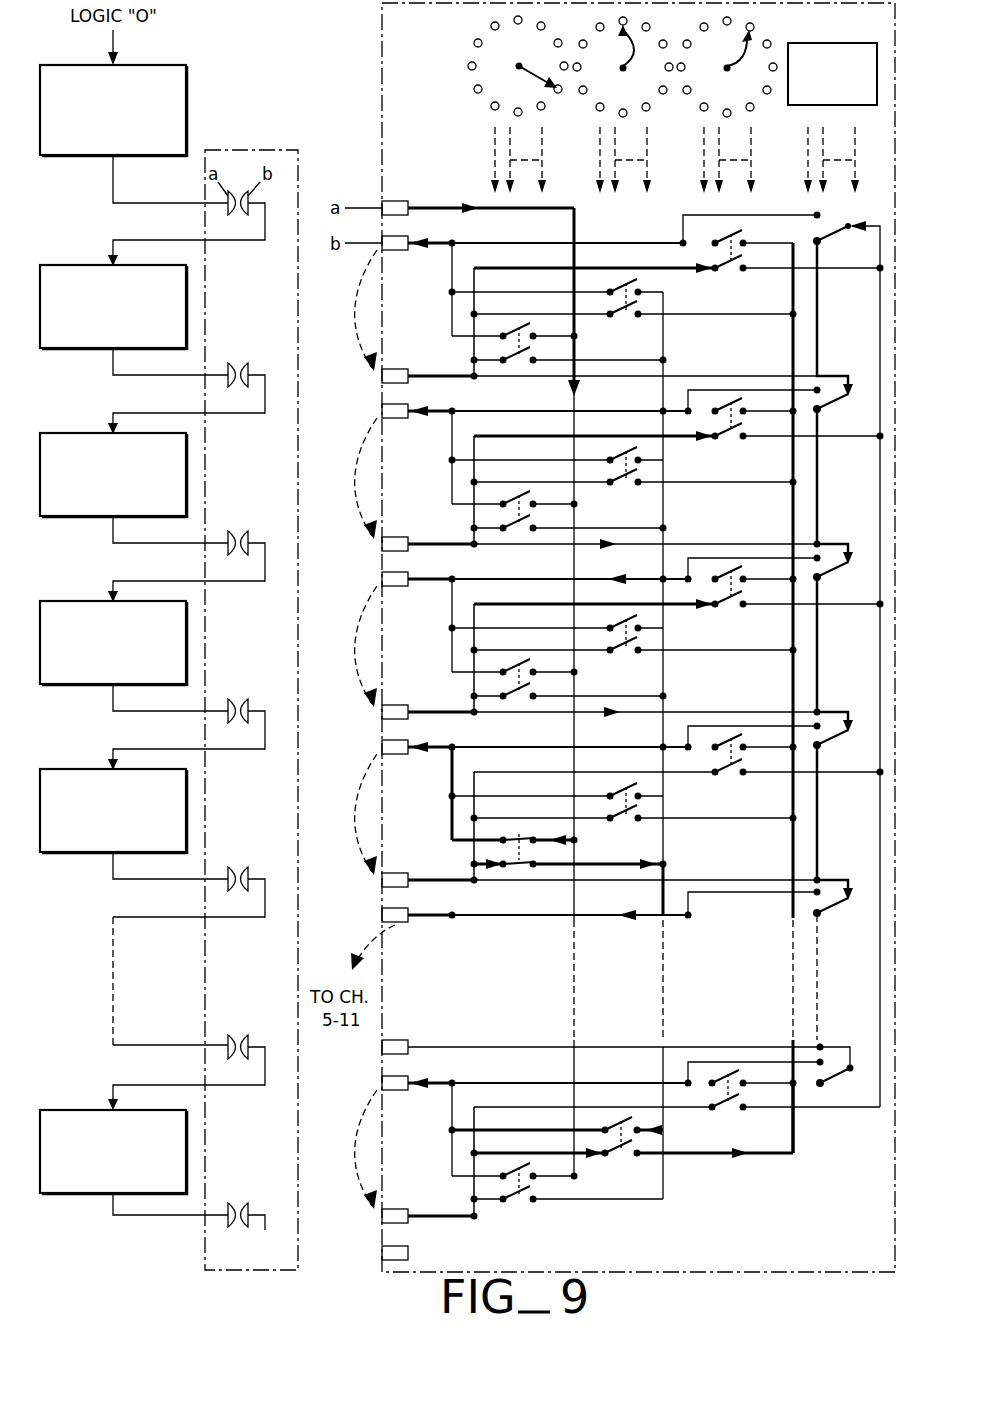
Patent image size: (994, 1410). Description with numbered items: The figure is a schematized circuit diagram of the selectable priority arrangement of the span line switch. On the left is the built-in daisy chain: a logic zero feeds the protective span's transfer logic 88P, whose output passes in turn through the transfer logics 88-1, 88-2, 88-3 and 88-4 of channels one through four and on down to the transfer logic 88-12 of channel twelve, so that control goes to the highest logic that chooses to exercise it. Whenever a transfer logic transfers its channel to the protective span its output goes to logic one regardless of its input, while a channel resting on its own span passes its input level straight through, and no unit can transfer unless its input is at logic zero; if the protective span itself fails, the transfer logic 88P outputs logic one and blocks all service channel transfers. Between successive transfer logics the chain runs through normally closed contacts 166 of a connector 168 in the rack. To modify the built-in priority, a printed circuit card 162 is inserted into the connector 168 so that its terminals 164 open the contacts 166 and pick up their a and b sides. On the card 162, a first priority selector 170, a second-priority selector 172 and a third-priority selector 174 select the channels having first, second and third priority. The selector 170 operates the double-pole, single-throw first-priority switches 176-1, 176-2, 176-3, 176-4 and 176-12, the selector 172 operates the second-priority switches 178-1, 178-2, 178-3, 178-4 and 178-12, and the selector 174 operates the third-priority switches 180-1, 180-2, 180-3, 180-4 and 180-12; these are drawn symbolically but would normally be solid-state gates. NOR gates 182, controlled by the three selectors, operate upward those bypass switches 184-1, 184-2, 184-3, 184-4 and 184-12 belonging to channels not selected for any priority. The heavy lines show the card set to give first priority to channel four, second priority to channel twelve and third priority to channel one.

The transfer logic of the protective span unit 88P is at (187, 93).
The transfer logic of channel 1 88-1 is at (187, 300).
The transfer logic of channel 2 88-2 is at (187, 468).
The transfer logic of channel 3 88-3 is at (187, 636).
The transfer logic of channel 4 88-4 is at (187, 804).
The transfer logic of channel 12 88-12 is at (187, 1145).
The priority card 162 is at (380, 72).
The terminals 164 is at (392, 192).
The normally closed contacts 166 is at (238, 196).
The connector 168 is at (303, 200).
The first priority selector 170 is at (533, 70).
The second-priority selector 172 is at (634, 70).
The third-priority selector 174 is at (738, 70).
The NOR gates 182 is at (819, 43).
The first-priority switch 176-1 is at (517, 359).
The first-priority switch 176-2 is at (517, 527).
The first-priority switch 176-3 is at (517, 695).
The first-priority switch 176-4 is at (517, 866).
The first-priority switch 176-12 is at (517, 1198).
The second-priority switch 178-1 is at (624, 313).
The second-priority switch 178-2 is at (624, 481).
The second-priority switch 178-3 is at (624, 649).
The second-priority switch 178-4 is at (624, 817).
The second-priority switch 178-12 is at (619, 1152).
The third-priority switch 180-1 is at (730, 266).
The third-priority switch 180-2 is at (730, 434).
The third-priority switch 180-3 is at (730, 602).
The third-priority switch 180-4 is at (730, 770).
The third-priority switch 180-12 is at (727, 1105).
The bypass switch 184-1 is at (832, 232).
The bypass switch 184-2 is at (832, 400).
The bypass switch 184-3 is at (832, 568).
The bypass switch 184-4 is at (832, 736).
The bypass switch 184-12 is at (834, 1082).